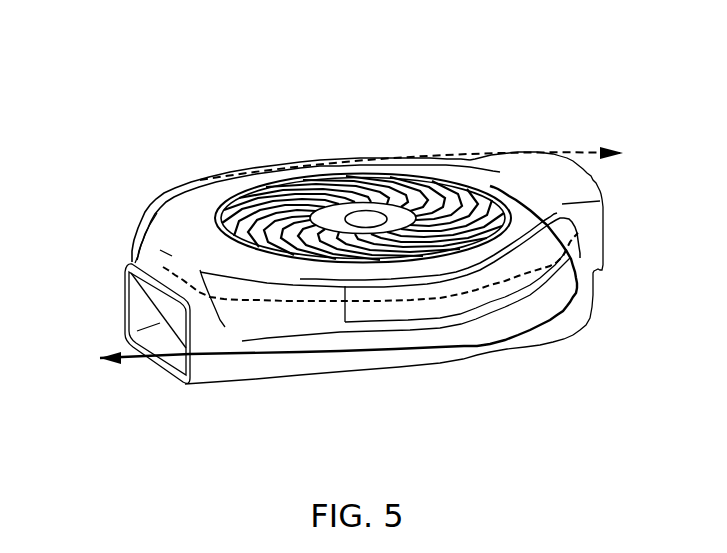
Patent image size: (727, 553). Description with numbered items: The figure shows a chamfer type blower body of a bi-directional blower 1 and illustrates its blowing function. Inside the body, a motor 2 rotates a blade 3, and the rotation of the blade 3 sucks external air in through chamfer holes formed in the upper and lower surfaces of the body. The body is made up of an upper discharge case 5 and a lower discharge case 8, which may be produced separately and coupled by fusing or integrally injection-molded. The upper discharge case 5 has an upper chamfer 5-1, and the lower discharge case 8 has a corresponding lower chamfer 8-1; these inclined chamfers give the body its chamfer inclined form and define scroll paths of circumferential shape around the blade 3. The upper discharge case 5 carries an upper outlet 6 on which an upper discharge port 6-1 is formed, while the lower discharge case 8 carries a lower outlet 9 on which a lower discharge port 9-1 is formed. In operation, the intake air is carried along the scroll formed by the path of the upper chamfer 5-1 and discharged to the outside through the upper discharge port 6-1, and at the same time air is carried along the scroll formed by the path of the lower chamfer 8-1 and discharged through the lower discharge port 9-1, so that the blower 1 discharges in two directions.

The bi-directional blower 1 is at (458, 116).
The motor 2 is at (363, 212).
The blade 3 is at (268, 205).
The upper discharge case 5 is at (172, 205).
The upper chamfer 5-1 is at (465, 305).
The upper outlet 6 is at (585, 185).
The upper discharge port 6-1 is at (608, 222).
The lower discharge case 8 is at (415, 362).
The lower chamfer 8-1 is at (135, 255).
The lower outlet 9 is at (204, 378).
The lower discharge port 9-1 is at (137, 317).